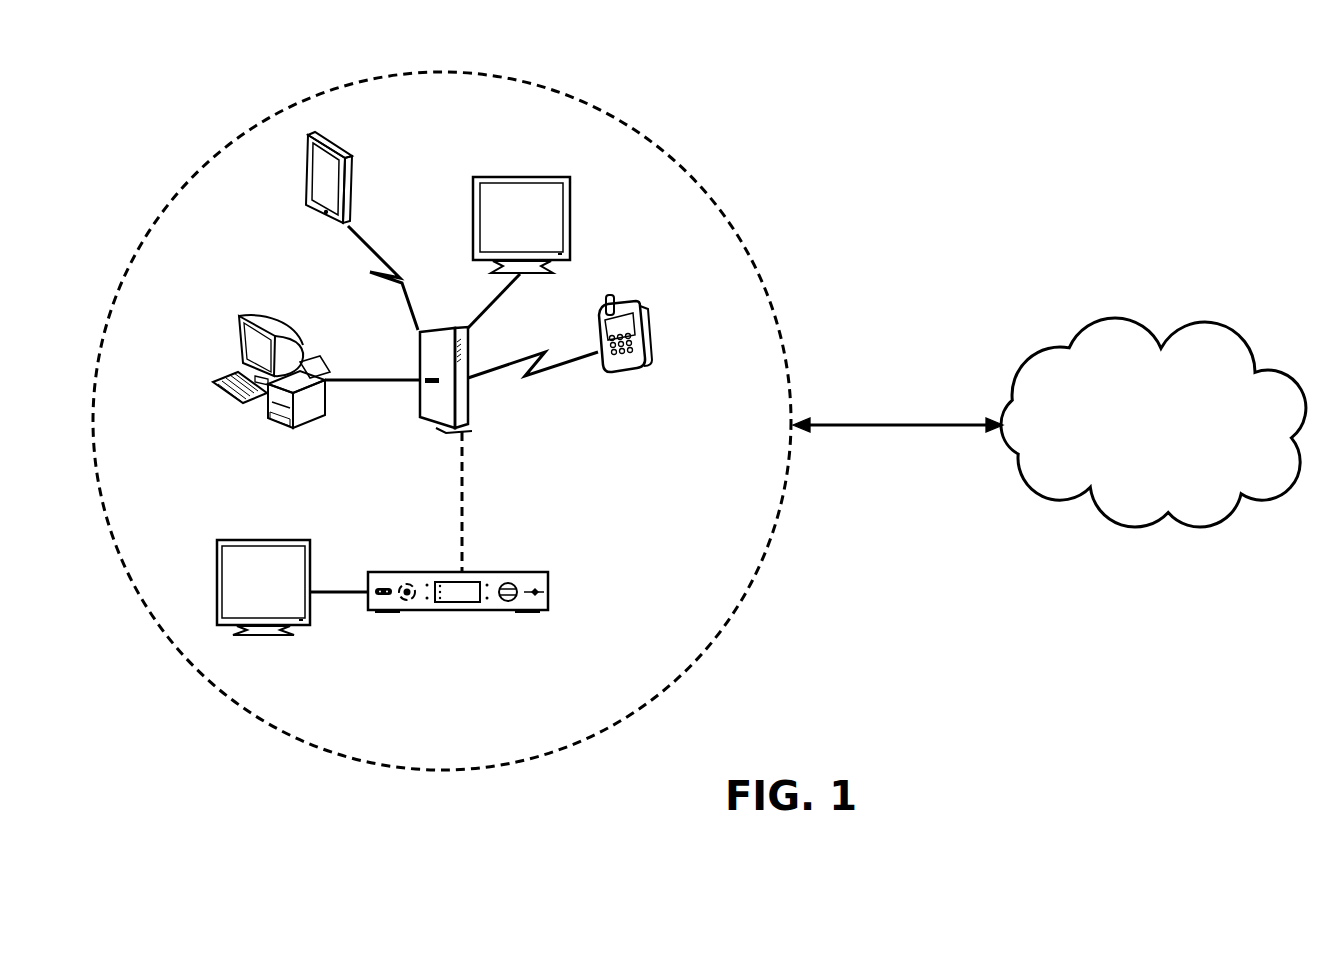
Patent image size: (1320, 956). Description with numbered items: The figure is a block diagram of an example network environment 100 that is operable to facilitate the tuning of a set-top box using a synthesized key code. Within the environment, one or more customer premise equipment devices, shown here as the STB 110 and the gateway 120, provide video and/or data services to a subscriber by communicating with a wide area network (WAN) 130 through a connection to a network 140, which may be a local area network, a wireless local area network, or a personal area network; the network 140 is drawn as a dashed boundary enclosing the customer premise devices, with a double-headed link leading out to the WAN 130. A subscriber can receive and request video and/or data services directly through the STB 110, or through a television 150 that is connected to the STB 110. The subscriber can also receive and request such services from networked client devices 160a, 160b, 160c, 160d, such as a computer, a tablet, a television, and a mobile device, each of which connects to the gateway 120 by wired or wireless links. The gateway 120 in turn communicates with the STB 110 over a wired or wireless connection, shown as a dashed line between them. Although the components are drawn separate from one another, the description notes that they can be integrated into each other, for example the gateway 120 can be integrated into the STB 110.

The network environment 100 is at (1232, 757).
The STB 110 is at (432, 612).
The gateway 120 is at (450, 432).
The wide area network (WAN) 130 is at (1143, 525).
The network 140 is at (292, 738).
The television 150 is at (280, 634).
The networked client device 160a is at (300, 428).
The networked client device 160b is at (338, 145).
The networked client device 160c is at (552, 174).
The networked client device 160d is at (643, 303).